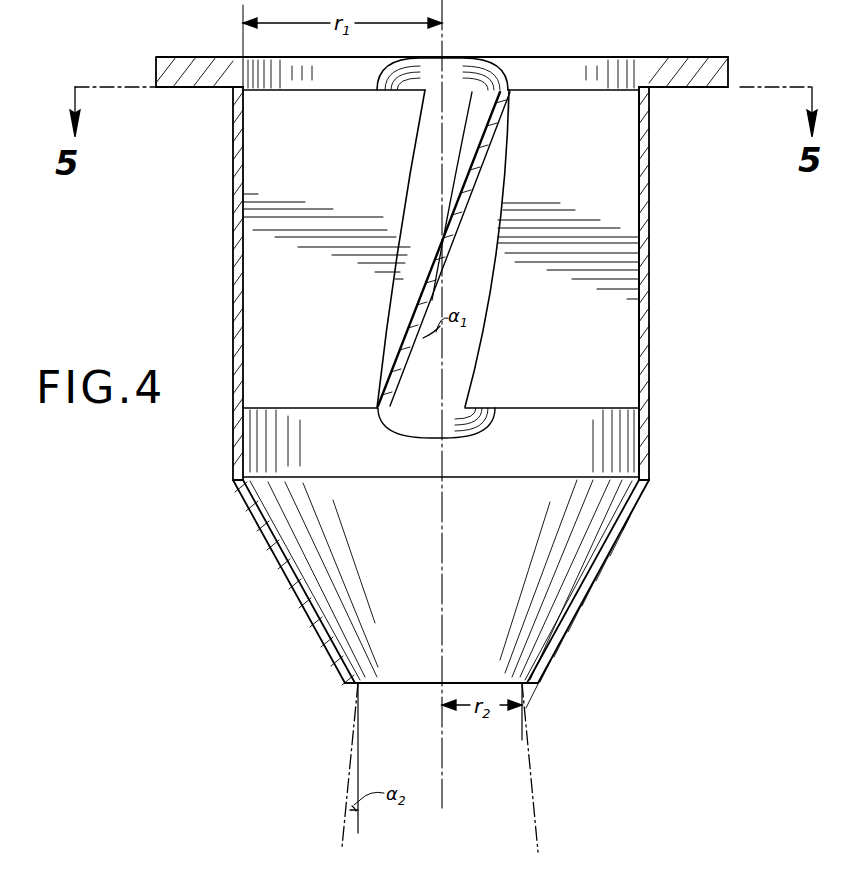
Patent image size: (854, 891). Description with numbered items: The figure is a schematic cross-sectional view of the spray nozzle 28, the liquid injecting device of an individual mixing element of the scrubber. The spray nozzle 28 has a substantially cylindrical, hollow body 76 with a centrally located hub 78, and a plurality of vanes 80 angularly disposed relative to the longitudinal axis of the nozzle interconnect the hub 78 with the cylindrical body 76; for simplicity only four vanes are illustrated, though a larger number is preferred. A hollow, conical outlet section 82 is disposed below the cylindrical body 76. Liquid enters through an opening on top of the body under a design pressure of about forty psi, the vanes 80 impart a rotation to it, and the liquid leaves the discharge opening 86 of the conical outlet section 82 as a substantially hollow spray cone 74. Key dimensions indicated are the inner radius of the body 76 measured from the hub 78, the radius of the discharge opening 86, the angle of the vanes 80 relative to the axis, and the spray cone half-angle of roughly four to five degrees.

The spray nozzle 28 is at (651, 196).
The spray cone 74 is at (350, 794).
The cylindrical body 76 is at (643, 250).
The hub 78 is at (478, 70).
The vanes 80 is at (463, 183).
The conical outlet section 82 is at (596, 578).
The discharge opening 86 is at (400, 685).